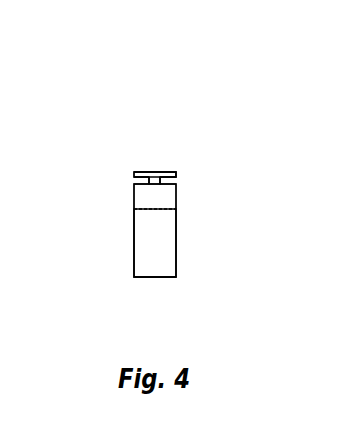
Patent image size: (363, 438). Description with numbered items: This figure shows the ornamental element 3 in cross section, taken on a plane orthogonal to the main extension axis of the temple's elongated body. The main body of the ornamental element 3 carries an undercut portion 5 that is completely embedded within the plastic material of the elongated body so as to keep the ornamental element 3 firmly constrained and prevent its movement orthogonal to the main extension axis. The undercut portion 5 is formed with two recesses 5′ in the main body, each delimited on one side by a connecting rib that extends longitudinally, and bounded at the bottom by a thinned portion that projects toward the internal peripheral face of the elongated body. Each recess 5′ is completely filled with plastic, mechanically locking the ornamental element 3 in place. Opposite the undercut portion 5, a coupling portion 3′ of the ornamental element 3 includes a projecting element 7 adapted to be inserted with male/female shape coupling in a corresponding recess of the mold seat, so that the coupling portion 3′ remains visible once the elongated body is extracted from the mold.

The ornamental element 3 is at (210, 166).
The coupling portion 3′ is at (208, 258).
The undercut portion 5 is at (146, 151).
The recess 5′ is at (147, 181).
The projecting element 7 is at (150, 257).